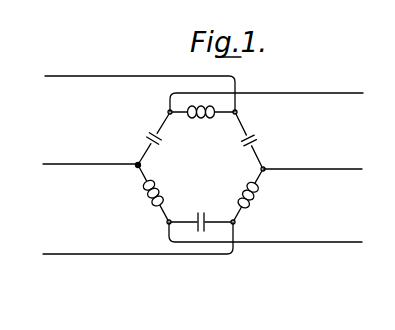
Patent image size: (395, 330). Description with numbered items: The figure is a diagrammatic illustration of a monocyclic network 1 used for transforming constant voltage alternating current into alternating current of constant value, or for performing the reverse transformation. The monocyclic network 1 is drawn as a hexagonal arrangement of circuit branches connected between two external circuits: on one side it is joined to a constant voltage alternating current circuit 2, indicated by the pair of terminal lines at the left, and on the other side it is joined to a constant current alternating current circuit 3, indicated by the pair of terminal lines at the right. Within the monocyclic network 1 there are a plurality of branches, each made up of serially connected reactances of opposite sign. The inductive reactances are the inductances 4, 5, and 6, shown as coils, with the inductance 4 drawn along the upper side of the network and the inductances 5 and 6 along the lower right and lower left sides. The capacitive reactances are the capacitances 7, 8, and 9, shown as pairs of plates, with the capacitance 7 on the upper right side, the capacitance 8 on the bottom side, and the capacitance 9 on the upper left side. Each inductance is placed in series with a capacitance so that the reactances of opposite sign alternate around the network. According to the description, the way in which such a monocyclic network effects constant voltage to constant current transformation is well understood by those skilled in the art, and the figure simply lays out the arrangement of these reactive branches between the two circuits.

The monocyclic network 1 is at (210, 177).
The constant voltage alternating current circuit 2 is at (55, 76).
The constant current alternating current circuit 3 is at (350, 93).
The inductance 4 is at (201, 119).
The inductance 5 is at (246, 193).
The inductance 6 is at (159, 193).
The capacitance 7 is at (261, 133).
The capacitance 8 is at (201, 211).
The capacitance 9 is at (148, 133).